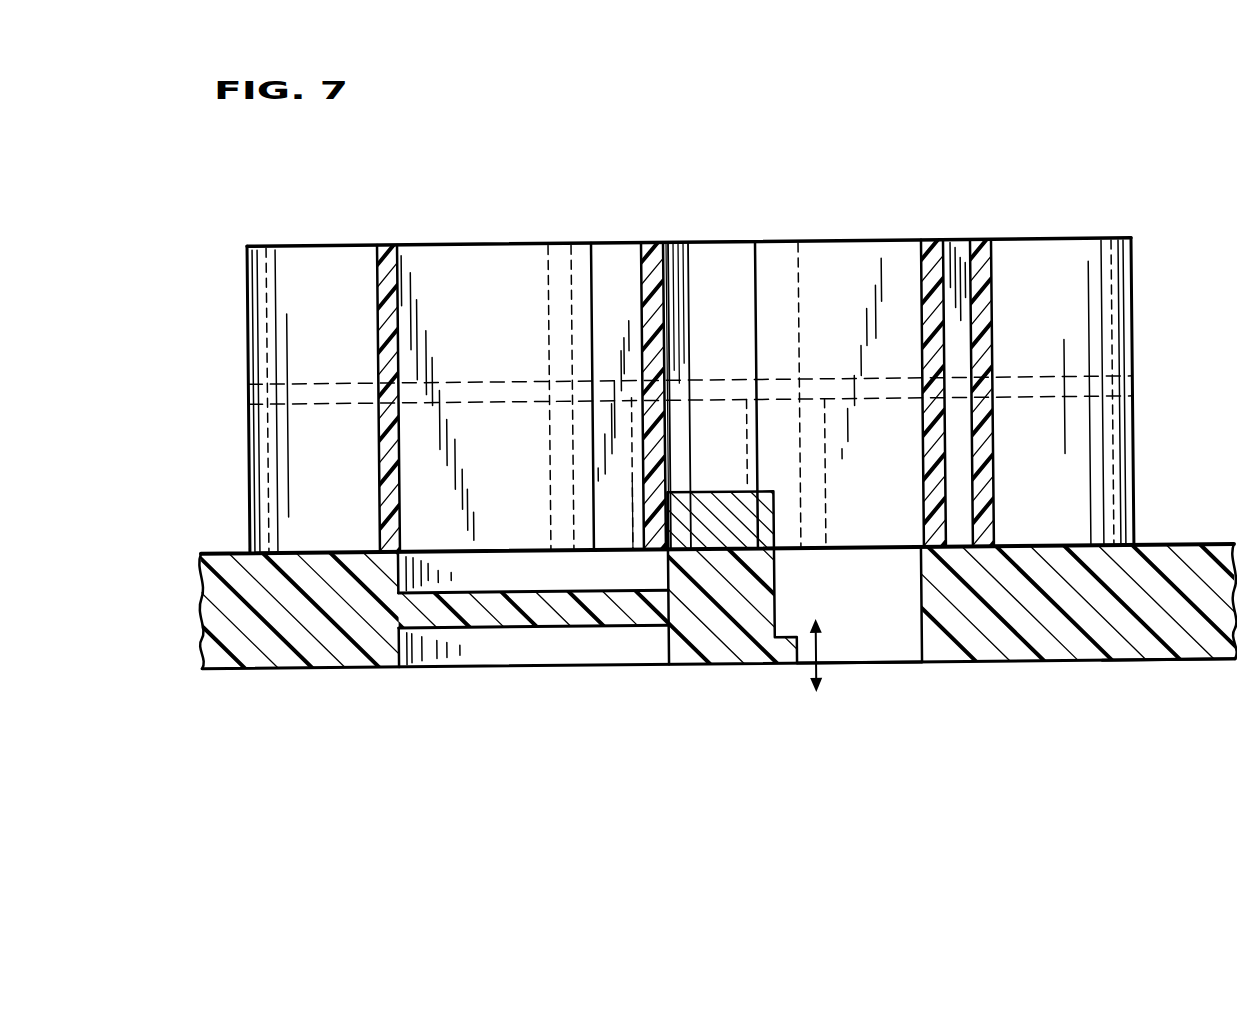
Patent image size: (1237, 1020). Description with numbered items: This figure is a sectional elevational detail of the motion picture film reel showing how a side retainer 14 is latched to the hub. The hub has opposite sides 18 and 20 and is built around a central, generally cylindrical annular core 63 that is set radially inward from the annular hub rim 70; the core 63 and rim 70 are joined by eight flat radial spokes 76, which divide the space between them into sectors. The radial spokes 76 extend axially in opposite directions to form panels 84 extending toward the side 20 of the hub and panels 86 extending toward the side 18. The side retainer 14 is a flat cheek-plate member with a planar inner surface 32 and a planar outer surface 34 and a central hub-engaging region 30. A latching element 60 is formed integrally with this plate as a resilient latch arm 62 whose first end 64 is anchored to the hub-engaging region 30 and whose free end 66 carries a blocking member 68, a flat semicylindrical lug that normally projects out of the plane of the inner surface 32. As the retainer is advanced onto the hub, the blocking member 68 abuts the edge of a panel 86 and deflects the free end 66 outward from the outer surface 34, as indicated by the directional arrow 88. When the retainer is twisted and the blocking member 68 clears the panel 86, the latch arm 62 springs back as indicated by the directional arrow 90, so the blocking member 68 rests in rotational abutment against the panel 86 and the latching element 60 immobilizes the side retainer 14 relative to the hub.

The side retainer 14 is at (1028, 680).
The side of hub 18 is at (480, 242).
The side of hub 20 is at (390, 556).
The hub-engaging region 30 is at (1122, 664).
The inner surface 32 is at (233, 551).
The outer surface 34 is at (953, 666).
The latching element 60 is at (570, 669).
The resilient latch arm 62 is at (503, 632).
The first end of latch arm 64 is at (403, 608).
The free end of latch arm 66 is at (693, 633).
The blocking member 68 is at (716, 490).
The annular hub rim 70 is at (1075, 290).
The radial spokes 76 is at (620, 268).
The panels 84 is at (704, 268).
The panels 86 is at (643, 487).
The directional arrow 88 is at (808, 685).
The directional arrow 90 is at (820, 640).
The annular core 63 is at (735, 268).